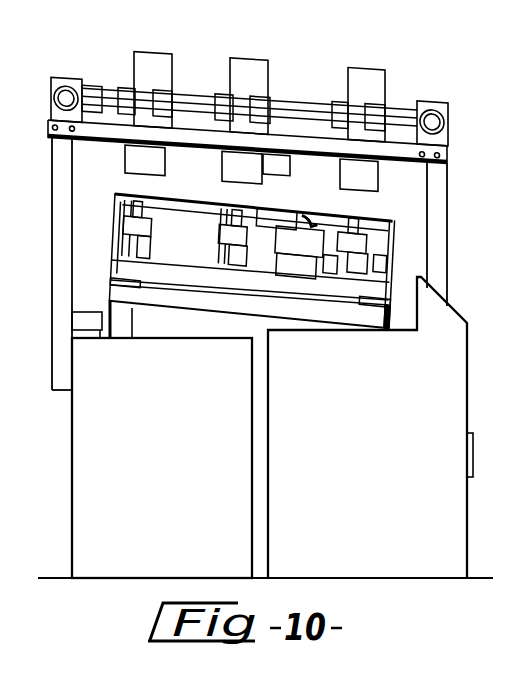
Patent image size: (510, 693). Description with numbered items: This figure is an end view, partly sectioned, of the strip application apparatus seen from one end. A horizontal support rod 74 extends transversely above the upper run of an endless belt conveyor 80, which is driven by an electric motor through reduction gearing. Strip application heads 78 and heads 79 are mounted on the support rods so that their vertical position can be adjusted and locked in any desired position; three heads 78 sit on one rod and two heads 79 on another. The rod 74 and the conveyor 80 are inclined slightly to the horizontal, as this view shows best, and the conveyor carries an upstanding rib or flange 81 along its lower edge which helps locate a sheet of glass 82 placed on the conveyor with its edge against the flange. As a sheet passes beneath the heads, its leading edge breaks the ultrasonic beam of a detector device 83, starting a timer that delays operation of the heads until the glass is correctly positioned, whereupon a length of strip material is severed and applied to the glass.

The support rod 74 is at (308, 110).
The head 78 is at (248, 71).
The head 79 is at (160, 62).
The endless belt conveyor 80 is at (167, 229).
The rib or flange 81 is at (377, 214).
The sheet of glass 82 is at (190, 196).
The detector device 83 is at (281, 240).